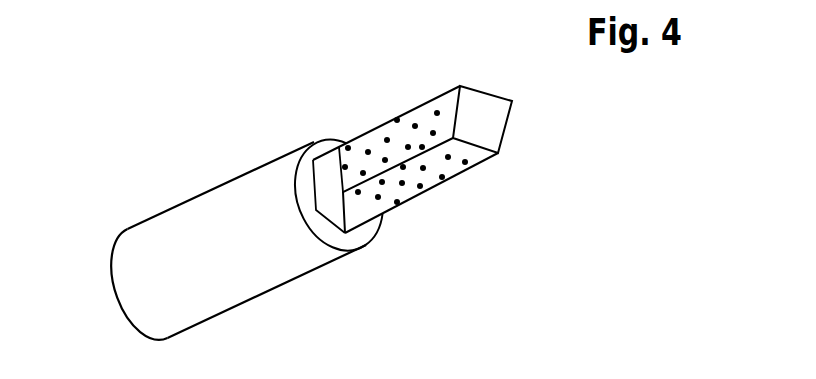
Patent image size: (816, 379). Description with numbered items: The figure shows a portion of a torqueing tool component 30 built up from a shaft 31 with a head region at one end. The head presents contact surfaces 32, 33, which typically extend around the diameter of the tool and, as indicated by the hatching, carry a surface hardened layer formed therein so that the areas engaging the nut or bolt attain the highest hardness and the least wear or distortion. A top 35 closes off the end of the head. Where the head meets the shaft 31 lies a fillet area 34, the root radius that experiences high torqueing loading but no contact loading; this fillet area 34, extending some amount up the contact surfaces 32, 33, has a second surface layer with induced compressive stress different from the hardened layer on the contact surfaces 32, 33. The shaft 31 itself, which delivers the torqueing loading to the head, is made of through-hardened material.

The torqueing tool component 30 is at (138, 56).
The shaft 31 is at (210, 276).
The contact surface 32 is at (368, 152).
The contact surface 33 is at (433, 180).
The fillet area 34 is at (352, 243).
The top 35 is at (482, 126).